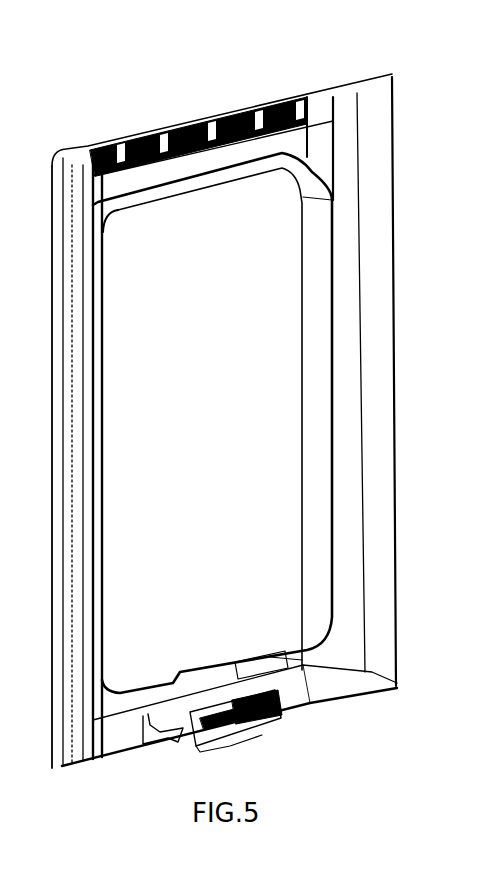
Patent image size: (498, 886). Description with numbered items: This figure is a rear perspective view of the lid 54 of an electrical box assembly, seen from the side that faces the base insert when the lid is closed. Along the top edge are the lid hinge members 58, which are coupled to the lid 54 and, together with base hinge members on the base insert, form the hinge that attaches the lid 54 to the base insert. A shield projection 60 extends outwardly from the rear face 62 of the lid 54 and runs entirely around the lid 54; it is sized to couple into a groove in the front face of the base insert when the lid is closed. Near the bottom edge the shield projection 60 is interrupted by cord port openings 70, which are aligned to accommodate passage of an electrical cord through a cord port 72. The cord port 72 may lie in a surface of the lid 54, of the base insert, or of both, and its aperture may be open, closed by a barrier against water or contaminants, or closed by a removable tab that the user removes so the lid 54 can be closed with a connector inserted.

The lid 54 is at (398, 412).
The lid hinge members 58 is at (311, 103).
The shield projection 60 is at (333, 558).
The rear face 62 is at (267, 660).
The cord port openings 70 is at (148, 716).
The cord port 72 is at (182, 730).